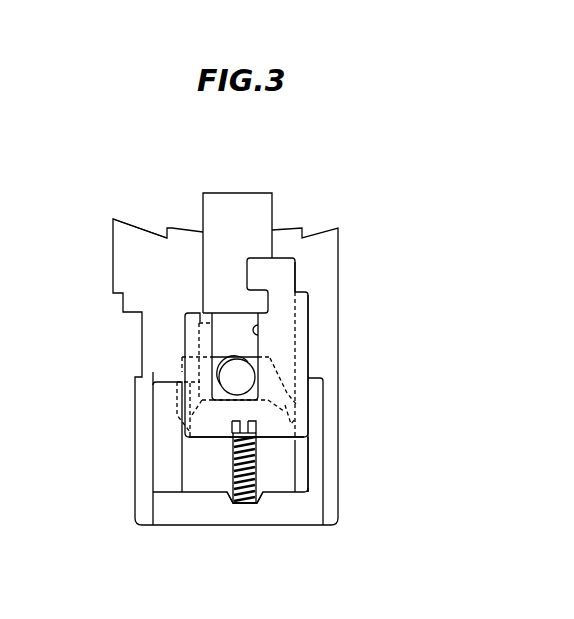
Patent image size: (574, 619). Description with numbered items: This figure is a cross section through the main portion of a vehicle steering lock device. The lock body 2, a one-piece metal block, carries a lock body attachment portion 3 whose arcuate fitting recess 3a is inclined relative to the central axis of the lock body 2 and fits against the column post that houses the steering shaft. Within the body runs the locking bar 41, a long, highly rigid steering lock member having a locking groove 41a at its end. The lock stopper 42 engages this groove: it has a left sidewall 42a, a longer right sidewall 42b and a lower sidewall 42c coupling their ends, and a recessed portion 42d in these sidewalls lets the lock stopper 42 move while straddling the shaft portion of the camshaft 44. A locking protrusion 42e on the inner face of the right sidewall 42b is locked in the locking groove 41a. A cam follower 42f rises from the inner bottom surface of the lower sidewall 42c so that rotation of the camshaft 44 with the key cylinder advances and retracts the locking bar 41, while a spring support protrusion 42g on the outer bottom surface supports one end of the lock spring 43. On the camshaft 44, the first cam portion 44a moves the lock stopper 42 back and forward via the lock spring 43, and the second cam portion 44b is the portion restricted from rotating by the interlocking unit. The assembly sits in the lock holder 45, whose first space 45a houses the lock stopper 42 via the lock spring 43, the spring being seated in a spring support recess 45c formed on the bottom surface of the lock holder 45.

The lock body 2 is at (359, 182).
The lock body attachment portion 3 is at (121, 251).
The fitting recess 3a is at (137, 226).
The locking bar 41 is at (248, 203).
The locking groove 41a is at (255, 267).
The lock stopper 42 is at (302, 312).
The left sidewall 42a is at (207, 341).
The right sidewall 42b is at (300, 404).
The lower sidewall 42c is at (278, 434).
The recessed portion 42d is at (255, 328).
The locking protrusion 42e is at (258, 277).
The cam follower 42f is at (276, 400).
The spring support protrusion 42g is at (236, 430).
The lock spring 43 is at (256, 481).
The camshaft 44 is at (262, 357).
The first cam portion 44a is at (240, 373).
The second cam portion 44b is at (183, 372).
The lock holder 45 is at (283, 521).
The first space 45a is at (283, 485).
The spring support recess 45c is at (152, 491).